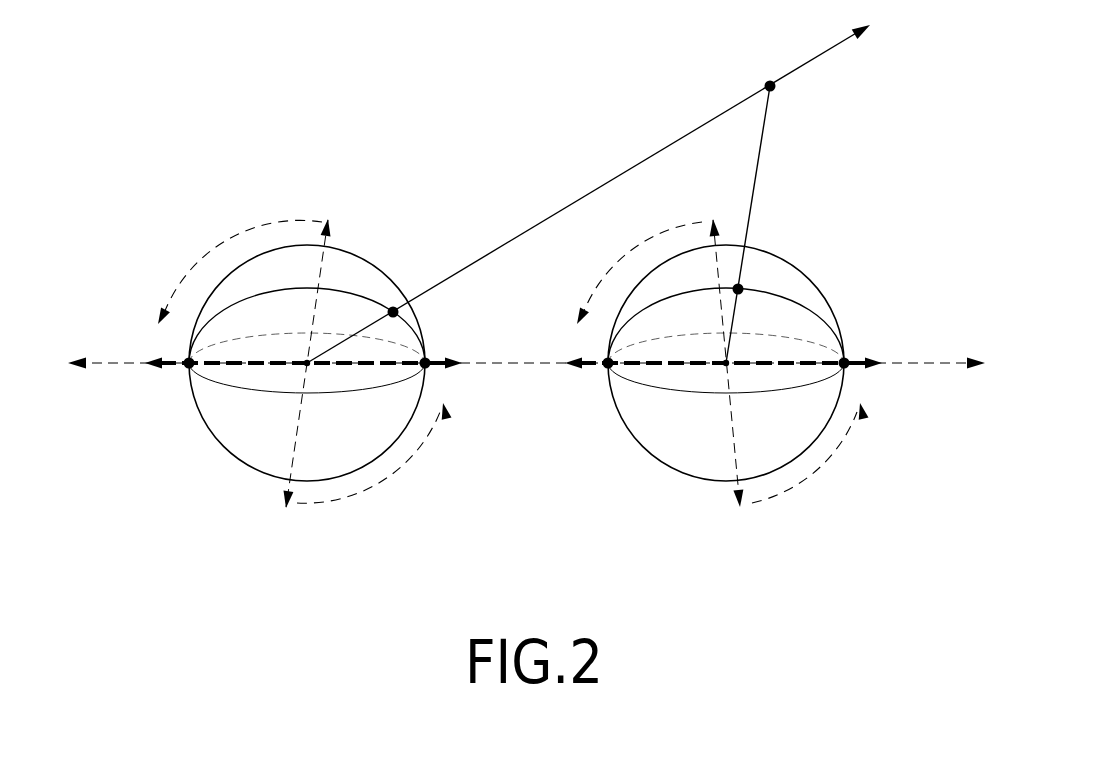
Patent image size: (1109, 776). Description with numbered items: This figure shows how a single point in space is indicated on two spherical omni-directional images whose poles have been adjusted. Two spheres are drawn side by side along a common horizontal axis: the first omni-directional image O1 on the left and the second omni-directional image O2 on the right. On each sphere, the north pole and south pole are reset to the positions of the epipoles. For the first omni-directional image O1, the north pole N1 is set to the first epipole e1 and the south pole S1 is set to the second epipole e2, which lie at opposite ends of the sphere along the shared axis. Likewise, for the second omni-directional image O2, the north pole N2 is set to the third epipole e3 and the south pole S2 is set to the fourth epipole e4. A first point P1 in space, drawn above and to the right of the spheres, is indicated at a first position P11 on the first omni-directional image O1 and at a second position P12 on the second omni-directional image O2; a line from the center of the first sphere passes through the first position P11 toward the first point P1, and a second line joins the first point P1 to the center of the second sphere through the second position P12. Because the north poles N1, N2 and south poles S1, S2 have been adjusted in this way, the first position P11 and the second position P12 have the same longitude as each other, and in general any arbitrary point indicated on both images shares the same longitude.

The first omni-directional image O1 is at (382, 230).
The second omni-directional image O2 is at (804, 230).
The north pole of the first omni-directional image N1 is at (281, 348).
The south pole of the first omni-directional image S1 is at (372, 437).
The north pole of the second omni-directional image N2 is at (698, 347).
The south pole of the second omni-directional image S2 is at (808, 437).
The first epipole e1 is at (179, 379).
The second epipole e2 is at (435, 379).
The third epipole e3 is at (597, 379).
The fourth epipole e4 is at (854, 379).
The first point P1 is at (590, 191).
The first position P11 is at (391, 296).
The second position P12 is at (758, 276).